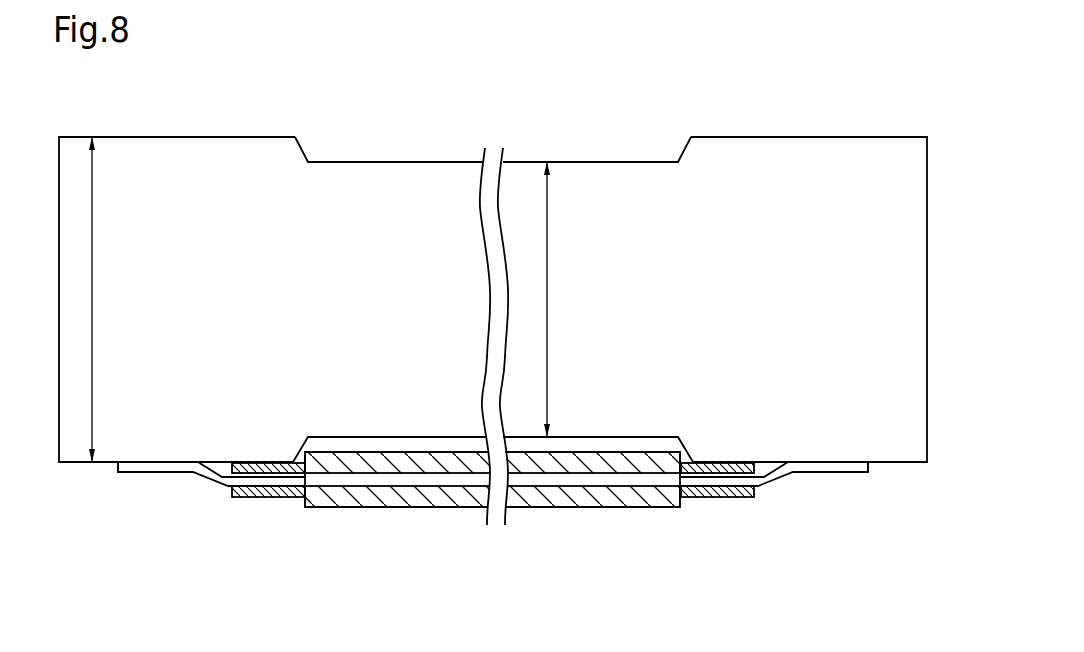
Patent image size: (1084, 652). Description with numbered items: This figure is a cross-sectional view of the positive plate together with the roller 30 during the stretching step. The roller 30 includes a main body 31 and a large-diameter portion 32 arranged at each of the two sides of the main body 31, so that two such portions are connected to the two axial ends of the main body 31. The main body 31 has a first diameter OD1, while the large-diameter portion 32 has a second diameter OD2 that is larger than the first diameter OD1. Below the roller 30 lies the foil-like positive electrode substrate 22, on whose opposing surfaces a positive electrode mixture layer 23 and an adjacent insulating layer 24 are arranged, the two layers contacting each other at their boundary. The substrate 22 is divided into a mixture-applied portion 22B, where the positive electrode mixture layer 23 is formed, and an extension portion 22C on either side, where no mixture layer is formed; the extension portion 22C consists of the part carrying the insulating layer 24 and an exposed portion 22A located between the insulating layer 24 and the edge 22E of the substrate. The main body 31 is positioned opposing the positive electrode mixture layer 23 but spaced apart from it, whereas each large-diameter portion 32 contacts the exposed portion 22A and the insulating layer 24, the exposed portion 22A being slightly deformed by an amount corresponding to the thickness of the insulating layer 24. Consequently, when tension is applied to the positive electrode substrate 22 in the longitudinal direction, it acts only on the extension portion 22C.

The roller 30 is at (493, 272).
The main body 31 is at (597, 170).
The large-diameter portion 32 is at (181, 148).
The positive electrode substrate 22 is at (500, 496).
The exposed portion 22A is at (500, 459).
The mixture-applied portion 22B is at (492, 496).
The extension portion 22C is at (500, 504).
The edge 22E is at (903, 488).
The positive electrode mixture layer 23 is at (305, 510).
The insulating layer 24 is at (276, 490).
The first diameter OD1 is at (571, 299).
The second diameter OD2 is at (118, 299).